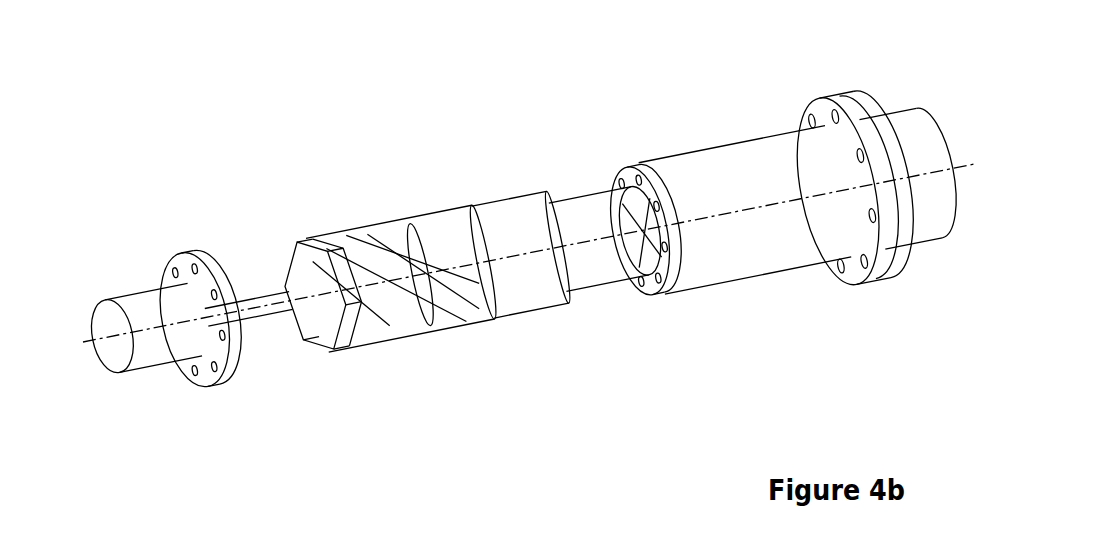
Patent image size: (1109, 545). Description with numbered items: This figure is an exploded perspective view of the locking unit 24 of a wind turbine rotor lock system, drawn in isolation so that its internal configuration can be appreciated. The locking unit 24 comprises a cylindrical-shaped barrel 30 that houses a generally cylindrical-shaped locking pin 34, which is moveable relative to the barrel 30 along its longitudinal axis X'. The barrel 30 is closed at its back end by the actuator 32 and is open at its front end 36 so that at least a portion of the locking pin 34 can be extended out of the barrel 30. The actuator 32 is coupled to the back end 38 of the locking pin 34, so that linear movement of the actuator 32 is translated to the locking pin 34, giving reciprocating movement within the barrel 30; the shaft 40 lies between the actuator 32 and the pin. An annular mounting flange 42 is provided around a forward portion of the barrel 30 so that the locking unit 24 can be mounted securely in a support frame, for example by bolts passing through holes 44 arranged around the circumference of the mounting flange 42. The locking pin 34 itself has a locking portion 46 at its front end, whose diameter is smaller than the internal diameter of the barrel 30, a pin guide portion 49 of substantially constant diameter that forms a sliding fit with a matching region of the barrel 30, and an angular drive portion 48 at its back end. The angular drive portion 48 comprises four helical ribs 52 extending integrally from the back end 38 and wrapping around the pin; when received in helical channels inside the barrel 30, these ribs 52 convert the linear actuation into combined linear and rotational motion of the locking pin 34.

The locking unit 24 is at (527, 225).
The barrel 30 is at (700, 148).
The actuator 32 is at (150, 248).
The locking pin 34 is at (445, 252).
The front end 36 is at (942, 103).
The back end 38 is at (299, 352).
The shaft 40 is at (240, 307).
The mounting flange 42 is at (657, 263).
The holes 44 is at (885, 247).
The locking portion 46 is at (587, 273).
The angular drive portion 48 is at (335, 365).
The pin guide portion 49 is at (513, 305).
The helical ribs 52 is at (370, 317).